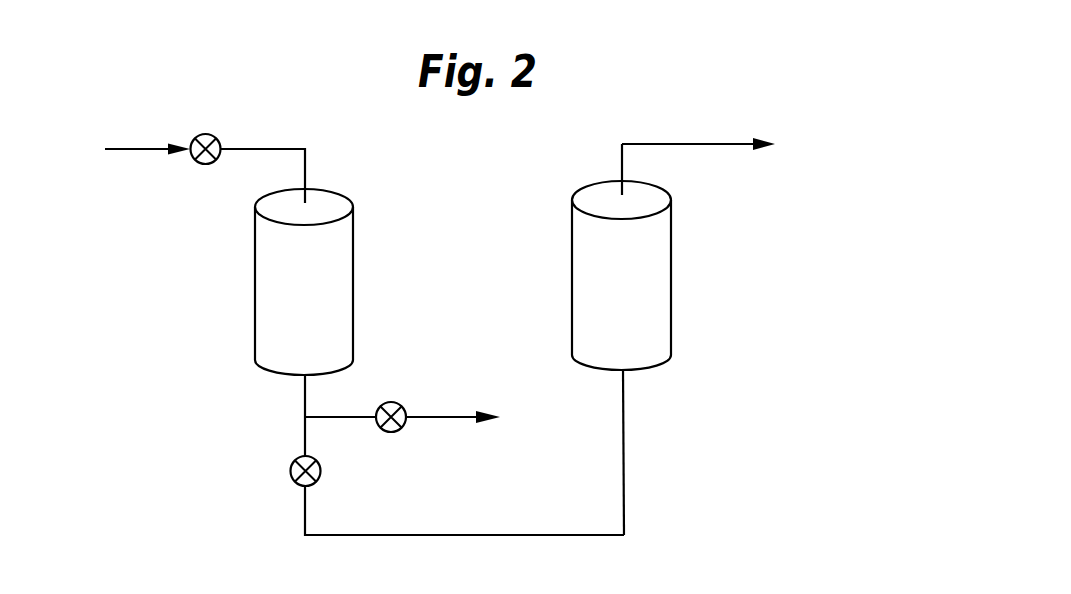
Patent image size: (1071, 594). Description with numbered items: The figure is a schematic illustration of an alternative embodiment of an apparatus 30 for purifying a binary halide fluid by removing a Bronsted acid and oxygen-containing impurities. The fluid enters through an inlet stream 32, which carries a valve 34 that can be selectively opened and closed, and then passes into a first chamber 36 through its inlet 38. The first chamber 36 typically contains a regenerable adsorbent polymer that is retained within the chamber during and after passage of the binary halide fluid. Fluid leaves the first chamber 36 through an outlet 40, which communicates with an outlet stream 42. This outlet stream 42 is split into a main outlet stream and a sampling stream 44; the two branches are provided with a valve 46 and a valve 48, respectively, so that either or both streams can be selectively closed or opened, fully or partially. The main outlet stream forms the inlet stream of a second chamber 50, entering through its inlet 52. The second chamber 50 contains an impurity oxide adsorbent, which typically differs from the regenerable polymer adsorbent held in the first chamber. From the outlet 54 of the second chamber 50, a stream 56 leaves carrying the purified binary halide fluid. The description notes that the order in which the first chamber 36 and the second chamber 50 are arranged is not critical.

The apparatus 30 is at (708, 249).
The inlet stream 32 is at (118, 147).
The valve 34 is at (202, 134).
The first chamber 36 is at (347, 252).
The inlet 38 is at (310, 202).
The outlet 40 is at (300, 382).
The outlet stream 42 is at (308, 395).
The sampling stream 44 is at (363, 418).
The valve 46 is at (292, 473).
The valve 48 is at (393, 403).
The second chamber 50 is at (672, 288).
The inlet 52 is at (625, 372).
The outlet 54 is at (620, 193).
The stream 56 is at (675, 145).